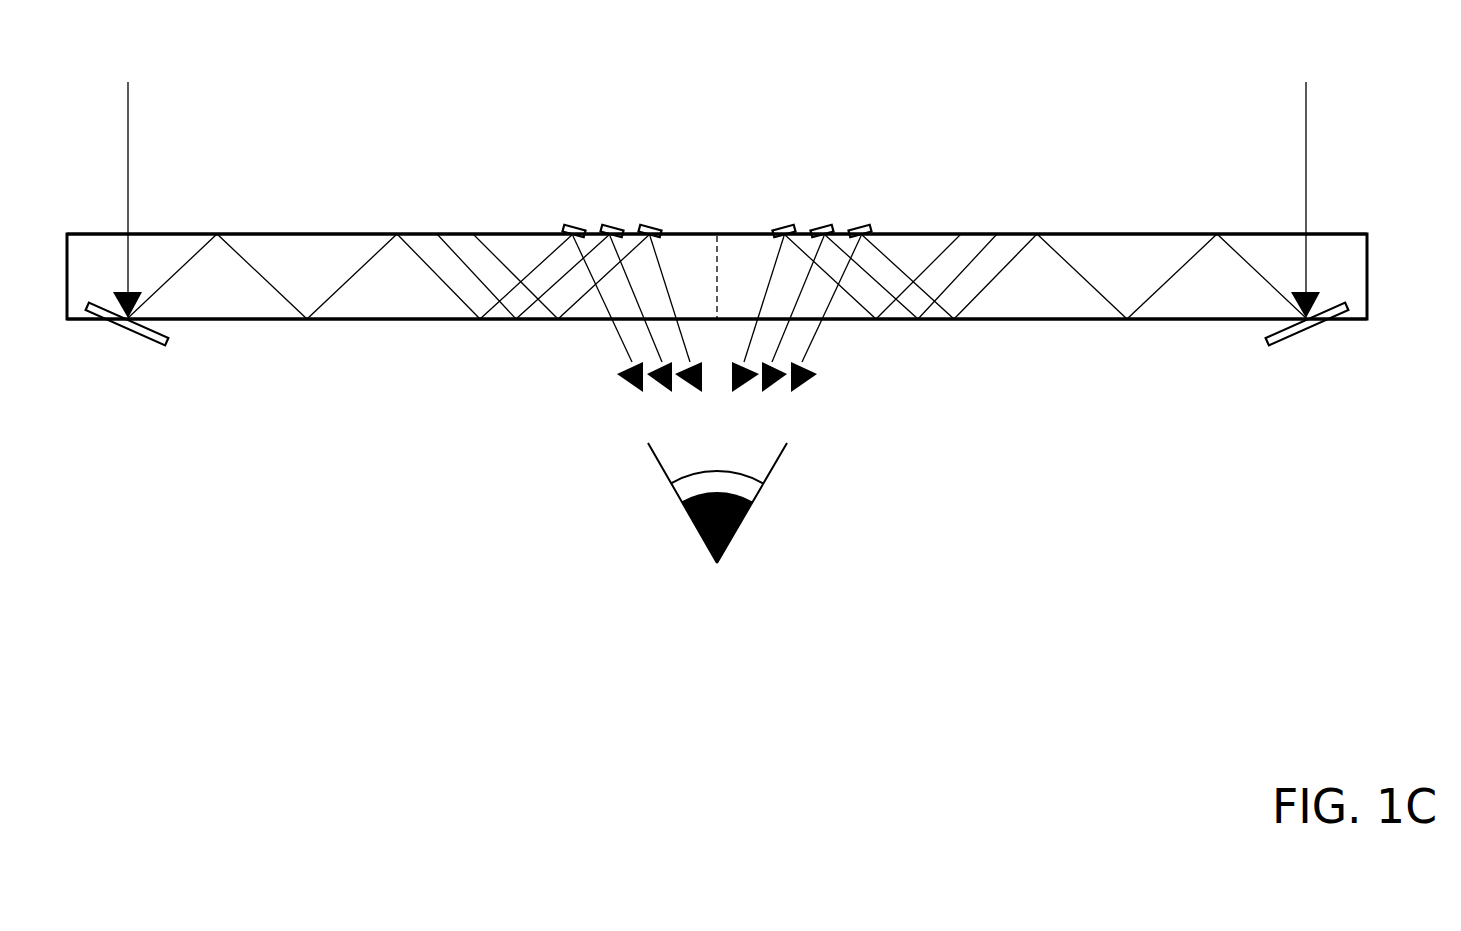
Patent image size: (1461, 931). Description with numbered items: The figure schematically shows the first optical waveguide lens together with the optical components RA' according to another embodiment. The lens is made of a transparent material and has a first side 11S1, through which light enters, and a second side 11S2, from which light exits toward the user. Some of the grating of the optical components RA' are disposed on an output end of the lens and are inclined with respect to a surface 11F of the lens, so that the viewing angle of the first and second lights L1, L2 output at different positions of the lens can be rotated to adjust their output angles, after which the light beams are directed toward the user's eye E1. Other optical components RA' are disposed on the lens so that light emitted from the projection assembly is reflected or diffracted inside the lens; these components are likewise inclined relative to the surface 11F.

The surface of the first optical waveguide lens 11F is at (358, 323).
The first side 11S1 is at (326, 232).
The second side 11S2 is at (540, 322).
The first light L1 is at (128, 184).
The second light L2 is at (1306, 184).
The optical component RA' is at (717, 278).
The eye E1 is at (717, 522).